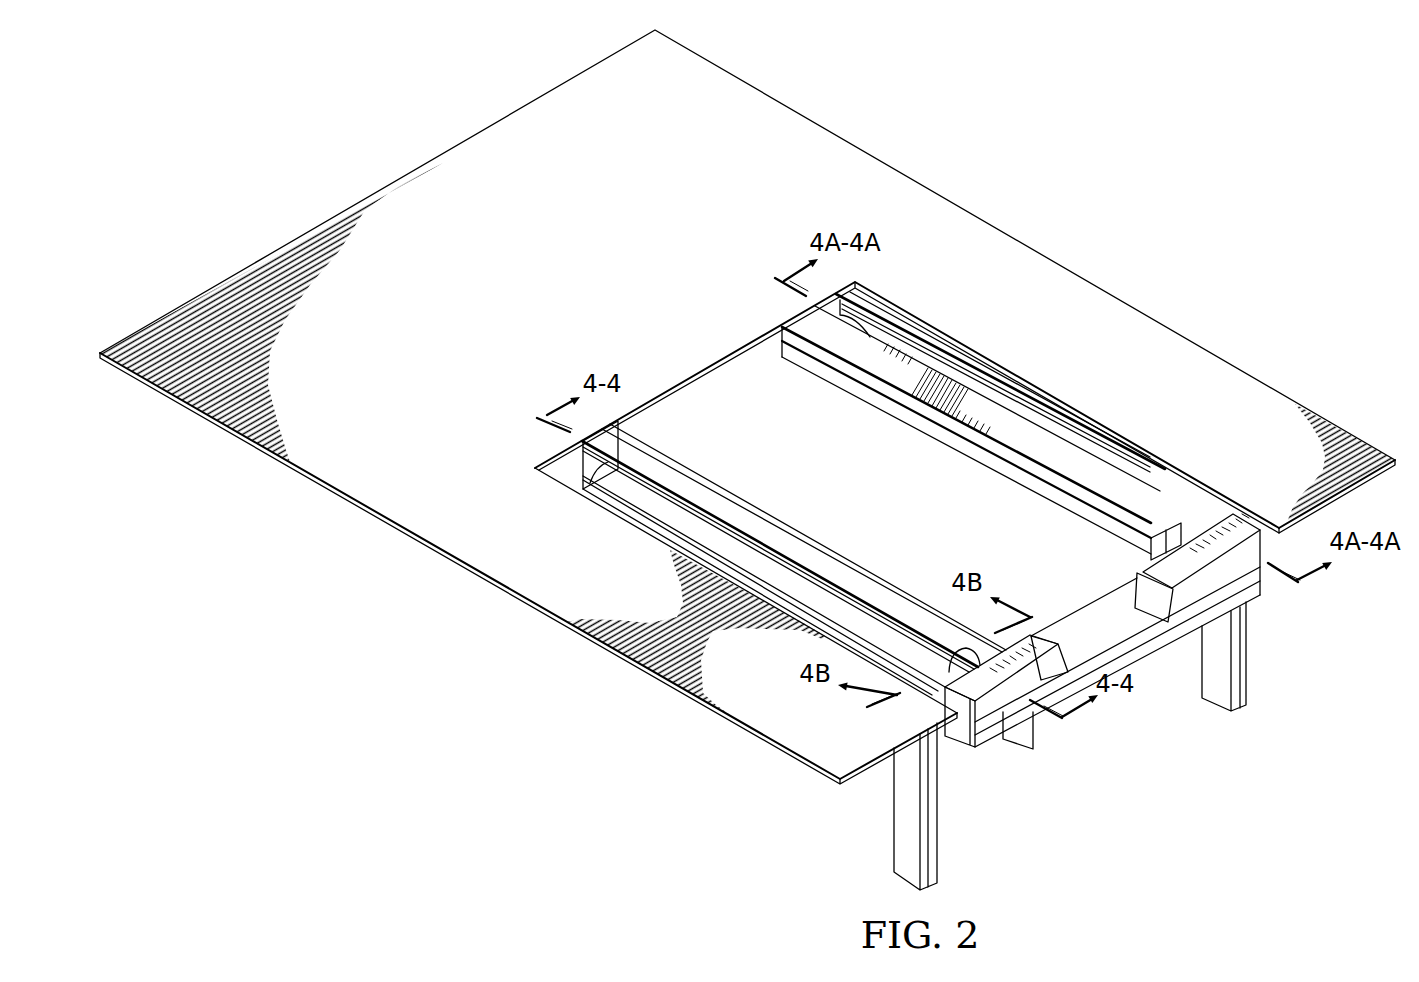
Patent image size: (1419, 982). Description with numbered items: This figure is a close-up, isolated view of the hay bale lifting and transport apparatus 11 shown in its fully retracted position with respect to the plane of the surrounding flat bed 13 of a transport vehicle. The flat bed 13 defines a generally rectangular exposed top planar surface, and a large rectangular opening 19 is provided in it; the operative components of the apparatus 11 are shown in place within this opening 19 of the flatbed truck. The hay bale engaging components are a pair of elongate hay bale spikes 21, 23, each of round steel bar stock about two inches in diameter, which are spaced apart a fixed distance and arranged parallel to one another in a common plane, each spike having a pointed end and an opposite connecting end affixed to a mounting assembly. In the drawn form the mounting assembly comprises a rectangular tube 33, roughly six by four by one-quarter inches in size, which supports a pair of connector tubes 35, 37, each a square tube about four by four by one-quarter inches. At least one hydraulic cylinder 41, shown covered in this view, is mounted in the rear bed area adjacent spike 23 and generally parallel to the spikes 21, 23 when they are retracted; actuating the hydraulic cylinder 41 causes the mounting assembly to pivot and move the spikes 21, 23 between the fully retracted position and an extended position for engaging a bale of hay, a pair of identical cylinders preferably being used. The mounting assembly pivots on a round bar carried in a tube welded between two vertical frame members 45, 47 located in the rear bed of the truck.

The hay bale lifting and transport apparatus 11 is at (1018, 403).
The flat bed 13 is at (1153, 330).
The opening 19 is at (730, 400).
The hay bale spike 21 is at (1128, 485).
The hay bale spike 23 is at (718, 548).
The rectangular tube 33 is at (1158, 667).
The connector tube 35 is at (1218, 578).
The connector tube 37 is at (985, 717).
The hydraulic cylinder 41 is at (797, 542).
The vertical frame member 45 is at (932, 853).
The vertical frame member 47 is at (1242, 675).